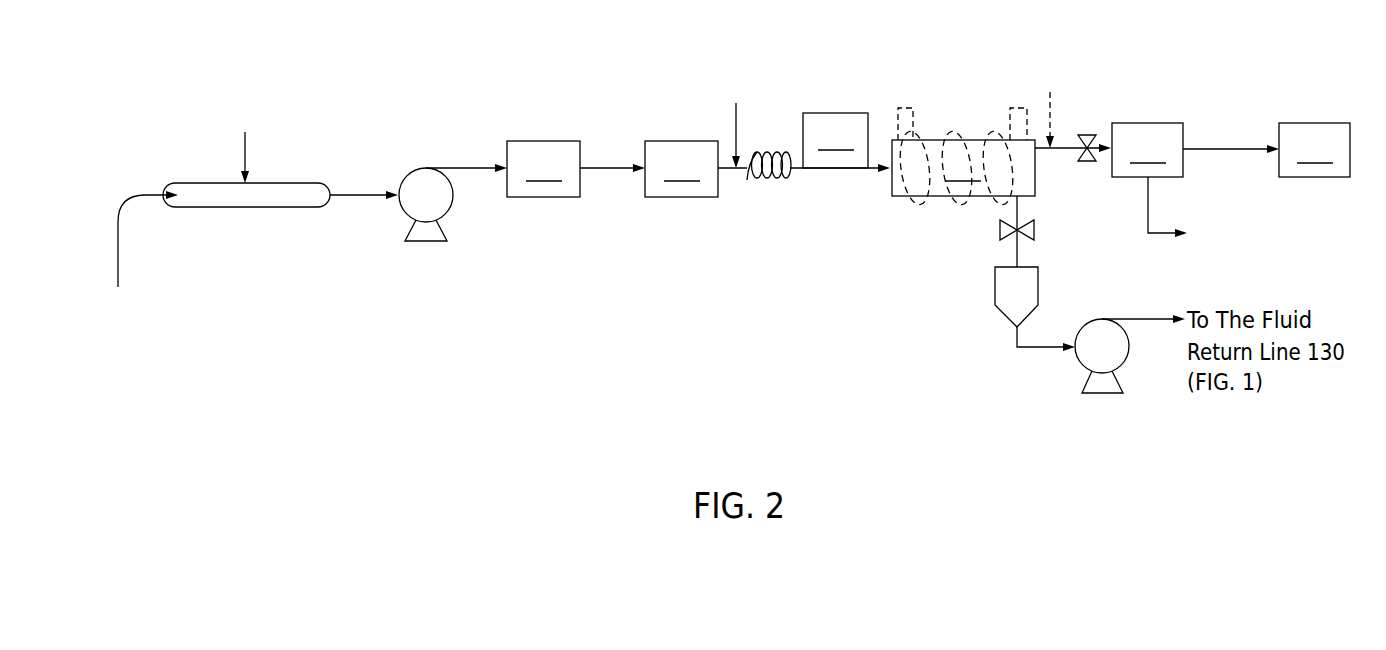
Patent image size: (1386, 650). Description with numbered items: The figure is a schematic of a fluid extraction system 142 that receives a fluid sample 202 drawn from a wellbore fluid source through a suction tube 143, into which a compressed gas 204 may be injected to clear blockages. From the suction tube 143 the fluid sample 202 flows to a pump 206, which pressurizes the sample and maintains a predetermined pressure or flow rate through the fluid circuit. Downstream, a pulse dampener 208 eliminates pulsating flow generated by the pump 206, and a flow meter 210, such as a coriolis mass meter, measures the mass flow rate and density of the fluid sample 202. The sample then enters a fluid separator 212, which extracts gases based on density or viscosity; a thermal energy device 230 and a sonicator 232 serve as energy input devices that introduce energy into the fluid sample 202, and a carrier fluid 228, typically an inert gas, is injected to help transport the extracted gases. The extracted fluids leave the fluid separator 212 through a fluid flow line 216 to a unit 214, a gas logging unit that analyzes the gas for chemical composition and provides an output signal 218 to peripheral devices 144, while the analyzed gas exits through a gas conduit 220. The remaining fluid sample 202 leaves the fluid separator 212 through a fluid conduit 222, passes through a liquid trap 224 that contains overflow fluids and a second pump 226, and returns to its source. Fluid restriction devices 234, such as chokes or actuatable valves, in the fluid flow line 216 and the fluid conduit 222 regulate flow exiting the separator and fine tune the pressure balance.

The fluid extraction system 142 is at (276, 78).
The suction tube 143 is at (260, 208).
The peripheral devices 144 is at (1314, 150).
The fluid sample 202 is at (118, 263).
The compressed gas 204 is at (248, 158).
The pump 206 is at (408, 168).
The pulse dampener 208 is at (543, 169).
The flow meter 210 is at (681, 169).
The fluid separator 212 is at (963, 168).
The unit 214 is at (1147, 150).
The fluid flow line 216 is at (1065, 150).
The output signal 218 is at (1233, 151).
The gas conduit 220 is at (1162, 234).
The fluid conduit 222 is at (1018, 205).
The liquid trap 224 is at (1038, 292).
The second pump 226 is at (1120, 366).
The carrier fluid 228 is at (736, 123).
The thermal energy device 230 is at (765, 181).
The sonicator 232 is at (1010, 108).
The fluid restriction devices 234 is at (1088, 135).